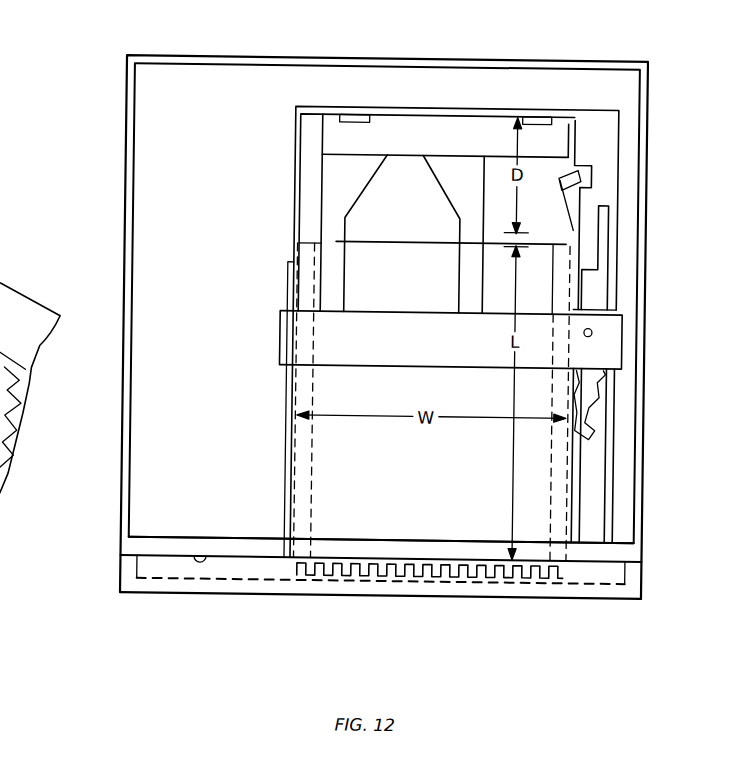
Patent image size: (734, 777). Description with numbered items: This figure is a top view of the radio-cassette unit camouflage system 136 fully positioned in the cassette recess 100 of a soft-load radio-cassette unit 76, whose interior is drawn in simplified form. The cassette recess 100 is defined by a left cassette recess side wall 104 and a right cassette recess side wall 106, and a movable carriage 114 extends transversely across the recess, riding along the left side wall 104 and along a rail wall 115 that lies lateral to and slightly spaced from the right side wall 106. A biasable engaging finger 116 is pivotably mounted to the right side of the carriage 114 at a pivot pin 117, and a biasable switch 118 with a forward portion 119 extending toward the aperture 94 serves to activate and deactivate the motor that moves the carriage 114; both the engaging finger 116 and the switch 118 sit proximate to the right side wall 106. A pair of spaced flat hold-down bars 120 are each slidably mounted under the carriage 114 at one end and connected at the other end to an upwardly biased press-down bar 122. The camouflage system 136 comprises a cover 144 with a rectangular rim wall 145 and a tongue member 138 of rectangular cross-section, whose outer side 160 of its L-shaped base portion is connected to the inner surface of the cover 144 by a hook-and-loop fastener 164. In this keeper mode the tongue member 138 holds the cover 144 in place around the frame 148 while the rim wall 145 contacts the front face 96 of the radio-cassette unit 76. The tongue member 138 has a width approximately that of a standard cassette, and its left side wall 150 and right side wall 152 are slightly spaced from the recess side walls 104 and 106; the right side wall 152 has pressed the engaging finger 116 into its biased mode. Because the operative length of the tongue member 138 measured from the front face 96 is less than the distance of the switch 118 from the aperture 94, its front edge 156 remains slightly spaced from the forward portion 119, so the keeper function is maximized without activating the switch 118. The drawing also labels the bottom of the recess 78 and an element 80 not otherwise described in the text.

The soft-load radio-cassette unit 76 is at (113, 210).
The bottom wall 78 is at (374, 539).
The mounting tab 80 is at (304, 113).
The aperture 94 is at (415, 558).
The front face 96 is at (205, 554).
The cassette recess 100 is at (351, 398).
The left cassette recess side wall 104 is at (291, 176).
The right cassette recess side wall 106 is at (577, 288).
The movable carriage 114 is at (452, 349).
The rail wall 115 is at (607, 304).
The biasable engaging finger 116 is at (586, 408).
The pivot pin 117 is at (592, 330).
The biasable switch 118 is at (578, 172).
The forward portion 119 is at (568, 198).
The hold-down bar 120 is at (468, 238).
The press-down bar 122 is at (409, 135).
The radio-cassette unit camouflage system 136 is at (537, 620).
The tongue member 138 is at (484, 310).
The cover 144 is at (395, 594).
The rim wall 145 is at (635, 570).
The frame 148 is at (145, 538).
The left side wall 150 is at (299, 462).
The right side wall 152 is at (560, 466).
The front edge 156 is at (395, 244).
The outer side 160 is at (3, 553).
The hook-and-loop fastener 164 is at (206, 583).